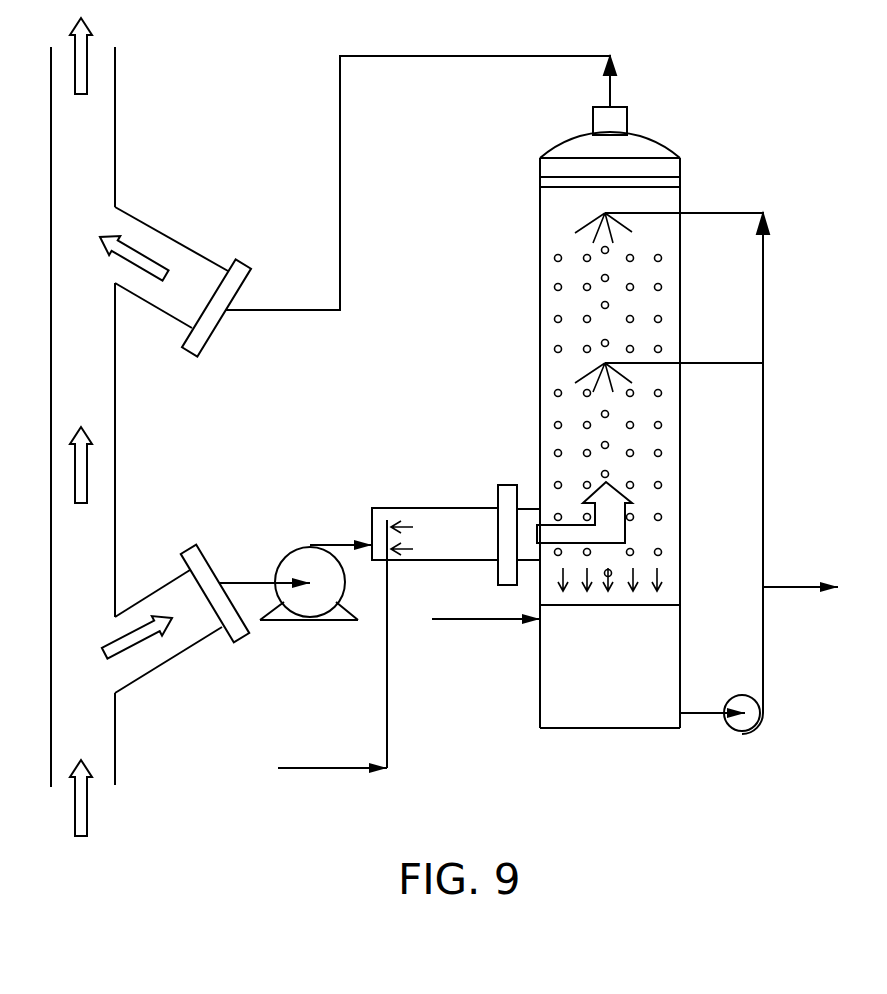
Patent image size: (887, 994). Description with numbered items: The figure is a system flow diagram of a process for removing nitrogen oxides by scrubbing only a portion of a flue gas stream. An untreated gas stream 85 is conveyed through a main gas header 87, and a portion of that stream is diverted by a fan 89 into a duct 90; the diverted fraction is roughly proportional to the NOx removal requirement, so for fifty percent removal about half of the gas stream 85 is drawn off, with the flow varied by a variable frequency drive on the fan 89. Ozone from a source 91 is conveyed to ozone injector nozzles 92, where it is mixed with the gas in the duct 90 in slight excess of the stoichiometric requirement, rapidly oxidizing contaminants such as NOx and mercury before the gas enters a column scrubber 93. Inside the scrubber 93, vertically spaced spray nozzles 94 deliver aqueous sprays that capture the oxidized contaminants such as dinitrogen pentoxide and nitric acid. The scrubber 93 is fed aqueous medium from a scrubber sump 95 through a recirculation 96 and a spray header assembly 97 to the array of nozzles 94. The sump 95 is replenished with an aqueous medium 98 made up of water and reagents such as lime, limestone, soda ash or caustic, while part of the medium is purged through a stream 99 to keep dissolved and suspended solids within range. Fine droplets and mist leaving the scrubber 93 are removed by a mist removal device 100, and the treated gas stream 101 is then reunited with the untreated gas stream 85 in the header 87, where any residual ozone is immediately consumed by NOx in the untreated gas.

The untreated gas stream 85 is at (87, 818).
The main gas header 87 is at (95, 547).
The fan 89 is at (290, 542).
The duct 90 is at (452, 538).
The ozone source 91 is at (319, 774).
The ozone injector nozzles 92 is at (407, 510).
The column scrubber 93 is at (683, 481).
The spray nozzles 94 is at (563, 380).
The scrubber sump 95 is at (538, 712).
The recirculation 96 is at (722, 681).
The spray header assembly 97 is at (766, 251).
The aqueous medium 98 is at (485, 620).
The purge stream 99 is at (806, 586).
The mist removal device 100 is at (536, 187).
The treated gas stream 101 is at (337, 187).